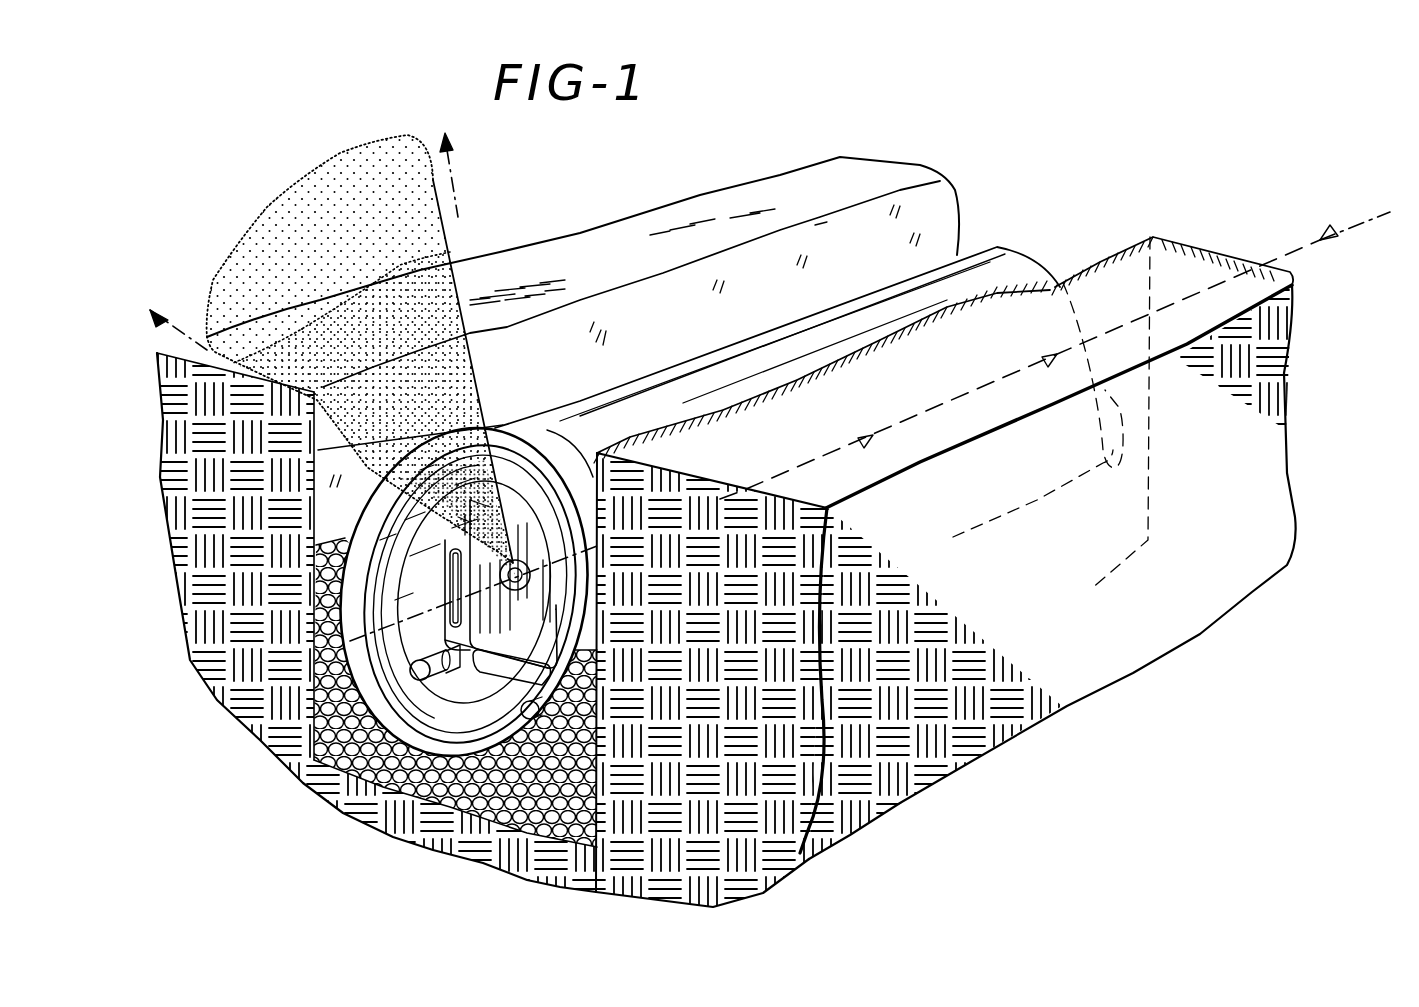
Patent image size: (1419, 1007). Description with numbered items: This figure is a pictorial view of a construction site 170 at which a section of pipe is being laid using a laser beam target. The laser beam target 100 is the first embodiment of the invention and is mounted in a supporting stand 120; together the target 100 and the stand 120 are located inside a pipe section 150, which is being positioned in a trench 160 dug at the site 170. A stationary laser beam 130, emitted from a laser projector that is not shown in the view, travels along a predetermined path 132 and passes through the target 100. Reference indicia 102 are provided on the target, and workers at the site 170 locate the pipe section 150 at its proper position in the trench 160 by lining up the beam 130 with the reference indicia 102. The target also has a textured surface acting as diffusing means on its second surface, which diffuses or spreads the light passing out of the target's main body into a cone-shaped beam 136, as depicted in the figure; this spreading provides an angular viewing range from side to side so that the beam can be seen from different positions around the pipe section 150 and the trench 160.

The laser beam target 100 is at (535, 626).
The reference indicia 102 is at (543, 510).
The supporting stand 120 is at (347, 571).
The laser beam 130 is at (926, 400).
The predetermined path 132 is at (1293, 257).
The cone-shaped beam 136 is at (287, 190).
The pipe section 150 is at (1040, 262).
The trench 160 is at (947, 192).
The construction site 170 is at (1004, 124).